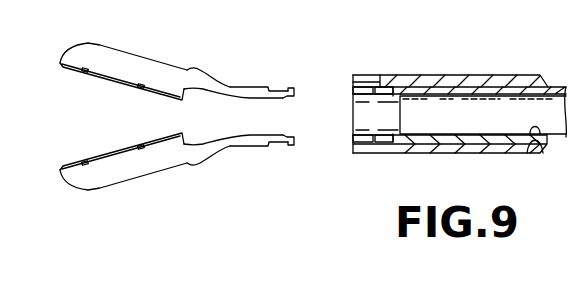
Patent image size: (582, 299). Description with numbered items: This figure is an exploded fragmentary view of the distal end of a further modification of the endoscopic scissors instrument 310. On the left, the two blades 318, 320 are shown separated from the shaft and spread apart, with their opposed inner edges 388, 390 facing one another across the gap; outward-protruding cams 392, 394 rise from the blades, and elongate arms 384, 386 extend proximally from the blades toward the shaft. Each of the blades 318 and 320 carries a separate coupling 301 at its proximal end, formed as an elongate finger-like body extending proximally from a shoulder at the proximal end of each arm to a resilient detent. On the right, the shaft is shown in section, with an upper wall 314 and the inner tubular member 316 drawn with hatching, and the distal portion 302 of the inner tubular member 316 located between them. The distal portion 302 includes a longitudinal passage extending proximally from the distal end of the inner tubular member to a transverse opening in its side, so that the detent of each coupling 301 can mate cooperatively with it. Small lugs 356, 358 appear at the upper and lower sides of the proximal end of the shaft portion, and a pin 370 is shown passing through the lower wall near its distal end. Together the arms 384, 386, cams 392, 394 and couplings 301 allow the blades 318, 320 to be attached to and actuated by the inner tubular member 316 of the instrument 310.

The coupling 301 is at (291, 88).
The distal portion 302 is at (418, 67).
The endoscopic scissors instrument 310 is at (448, 100).
The upper shaft wall 314 is at (483, 70).
The inner tubular member 316 is at (495, 152).
The blade 318 is at (159, 59).
The blade 320 is at (168, 173).
The upper lug 356 is at (378, 80).
The lower lug 358 is at (370, 148).
The pin 370 is at (537, 140).
The upper jaw arm 384 is at (242, 85).
The lower jaw arm 386 is at (240, 145).
The upper jaw tissue surface 388 is at (101, 75).
The lower jaw tissue surface 390 is at (112, 150).
The upper cam surface 392 is at (195, 68).
The lower cam surface 394 is at (181, 165).